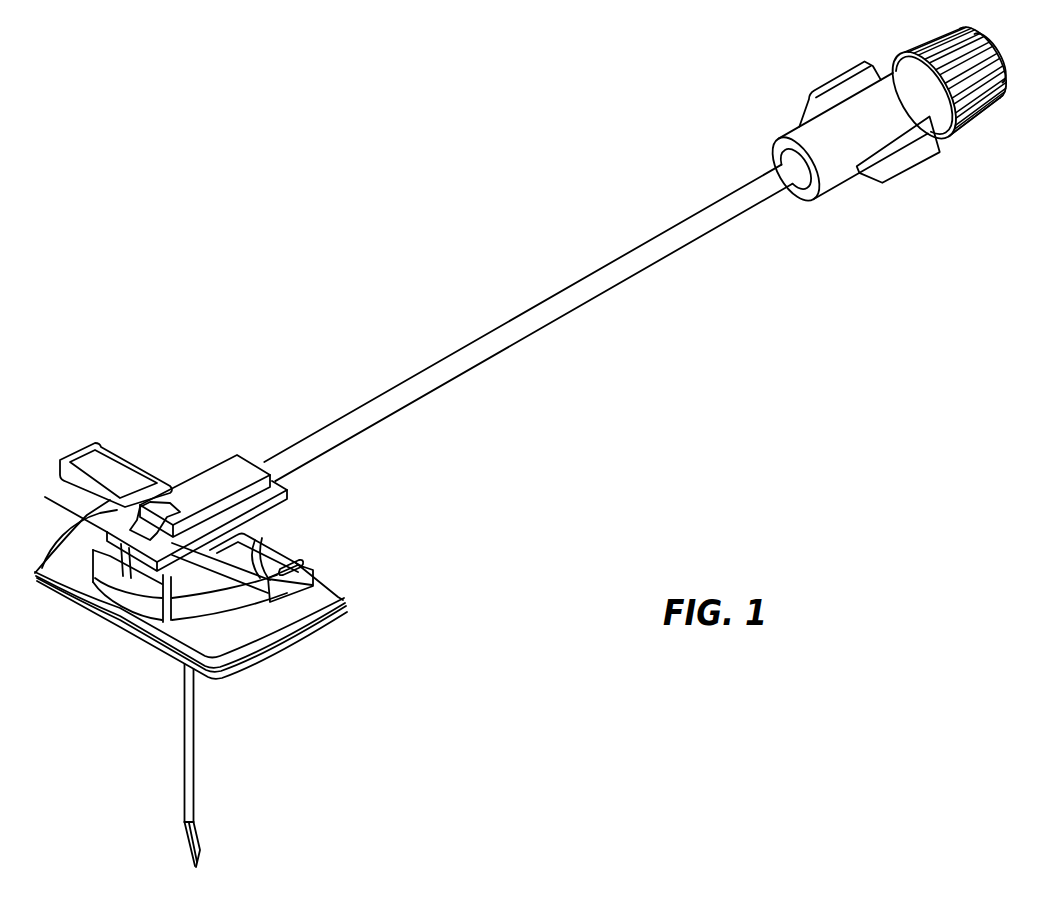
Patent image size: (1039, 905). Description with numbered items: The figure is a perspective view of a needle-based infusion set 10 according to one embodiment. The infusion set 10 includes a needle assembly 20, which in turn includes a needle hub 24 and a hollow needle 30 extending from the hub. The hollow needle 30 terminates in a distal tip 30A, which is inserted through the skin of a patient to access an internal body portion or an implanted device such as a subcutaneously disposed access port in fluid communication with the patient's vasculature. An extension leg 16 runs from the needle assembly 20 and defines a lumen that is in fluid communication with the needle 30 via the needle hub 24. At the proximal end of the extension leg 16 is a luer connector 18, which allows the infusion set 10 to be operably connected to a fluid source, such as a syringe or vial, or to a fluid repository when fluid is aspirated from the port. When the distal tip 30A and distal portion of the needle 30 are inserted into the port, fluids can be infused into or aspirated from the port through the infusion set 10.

The infusion set 10 is at (393, 302).
The extension leg 16 is at (560, 313).
The luer connector 18 is at (850, 128).
The needle assembly 20 is at (305, 674).
The needle hub 24 is at (285, 546).
The hollow needle 30 is at (180, 770).
The distal tip 30A is at (193, 870).